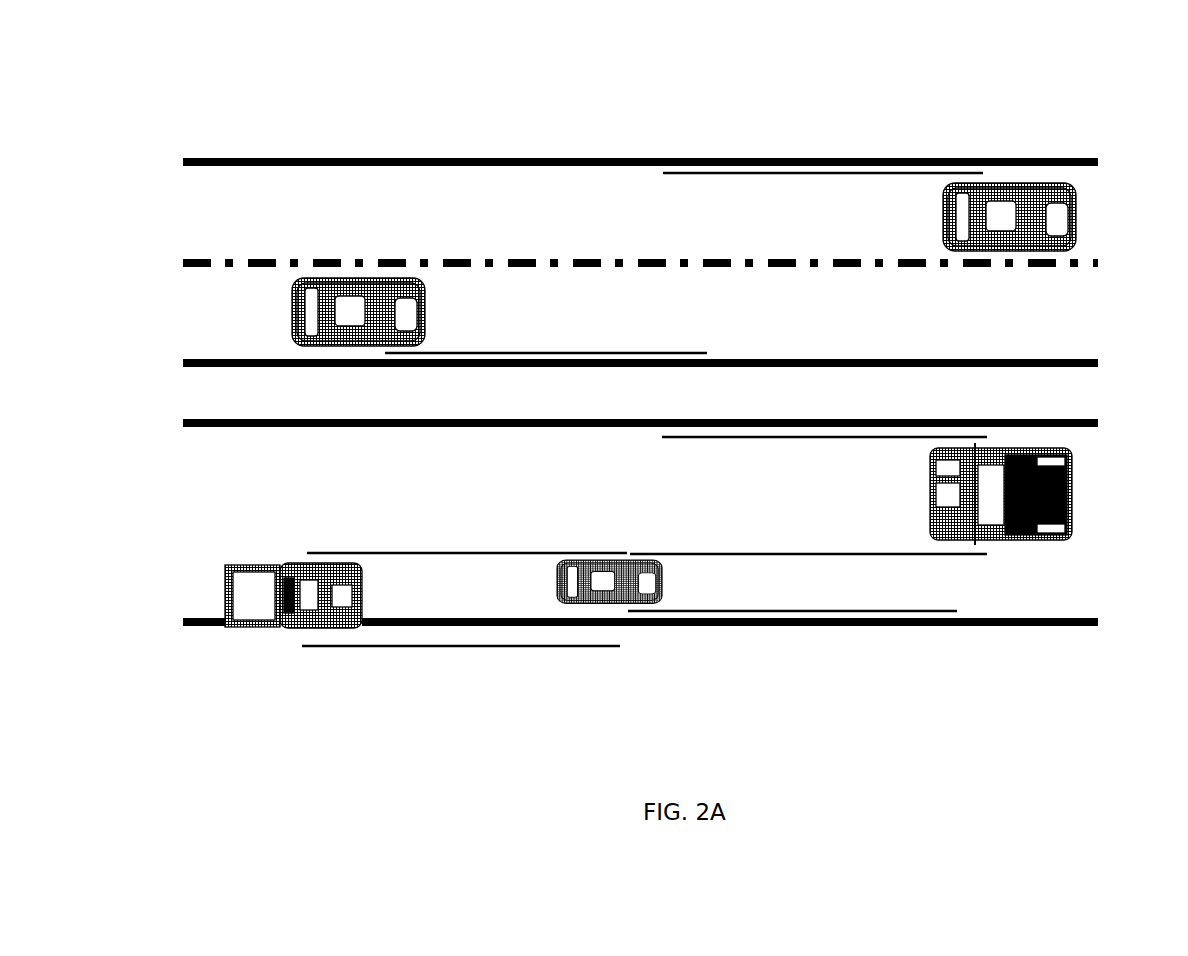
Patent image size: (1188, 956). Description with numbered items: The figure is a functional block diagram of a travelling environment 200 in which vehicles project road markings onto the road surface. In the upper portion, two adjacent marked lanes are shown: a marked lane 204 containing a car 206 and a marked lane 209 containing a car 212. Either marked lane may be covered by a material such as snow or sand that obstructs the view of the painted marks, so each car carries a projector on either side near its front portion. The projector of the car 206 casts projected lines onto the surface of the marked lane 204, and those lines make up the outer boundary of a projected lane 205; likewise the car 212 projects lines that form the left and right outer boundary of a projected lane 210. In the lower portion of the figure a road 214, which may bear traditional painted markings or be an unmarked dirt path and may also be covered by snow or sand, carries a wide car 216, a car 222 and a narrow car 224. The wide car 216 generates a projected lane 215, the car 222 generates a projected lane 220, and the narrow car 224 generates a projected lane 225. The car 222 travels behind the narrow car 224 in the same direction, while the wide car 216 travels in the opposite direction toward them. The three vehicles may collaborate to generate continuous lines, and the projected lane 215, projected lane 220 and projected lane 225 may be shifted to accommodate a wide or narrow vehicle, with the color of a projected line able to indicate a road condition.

The travelling environment 200 is at (1152, 72).
The marked lane 204 is at (1114, 263).
The projected lane 205 is at (643, 173).
The car 206 is at (935, 232).
The marked lane 209 is at (1114, 263).
The projected lane 210 is at (734, 268).
The car 212 is at (285, 325).
The road 214 is at (1114, 423).
The projected lane 215 is at (652, 437).
The wide car 216 is at (920, 507).
The projected lane 220 is at (486, 553).
The car 222 is at (276, 556).
The narrow car 224 is at (553, 557).
The projected lane 225 is at (1006, 555).